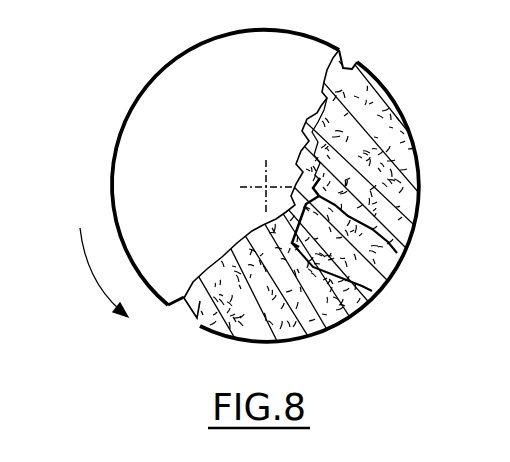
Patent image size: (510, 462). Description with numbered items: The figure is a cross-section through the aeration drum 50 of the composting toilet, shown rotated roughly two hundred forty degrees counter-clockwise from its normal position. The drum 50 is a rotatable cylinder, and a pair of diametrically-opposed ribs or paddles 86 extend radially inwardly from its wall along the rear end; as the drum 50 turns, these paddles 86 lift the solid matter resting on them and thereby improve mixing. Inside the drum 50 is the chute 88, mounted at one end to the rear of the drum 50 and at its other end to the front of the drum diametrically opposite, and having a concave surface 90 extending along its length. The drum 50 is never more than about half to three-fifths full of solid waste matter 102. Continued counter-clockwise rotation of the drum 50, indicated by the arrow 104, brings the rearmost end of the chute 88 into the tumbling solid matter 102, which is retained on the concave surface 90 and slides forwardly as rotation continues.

The aeration drum 50 is at (158, 75).
The ribs or paddles 86 is at (346, 65).
The chute 88 is at (409, 212).
The concave surface 90 is at (267, 225).
The solid waste matter 102 is at (318, 100).
The arrow 104 is at (93, 269).